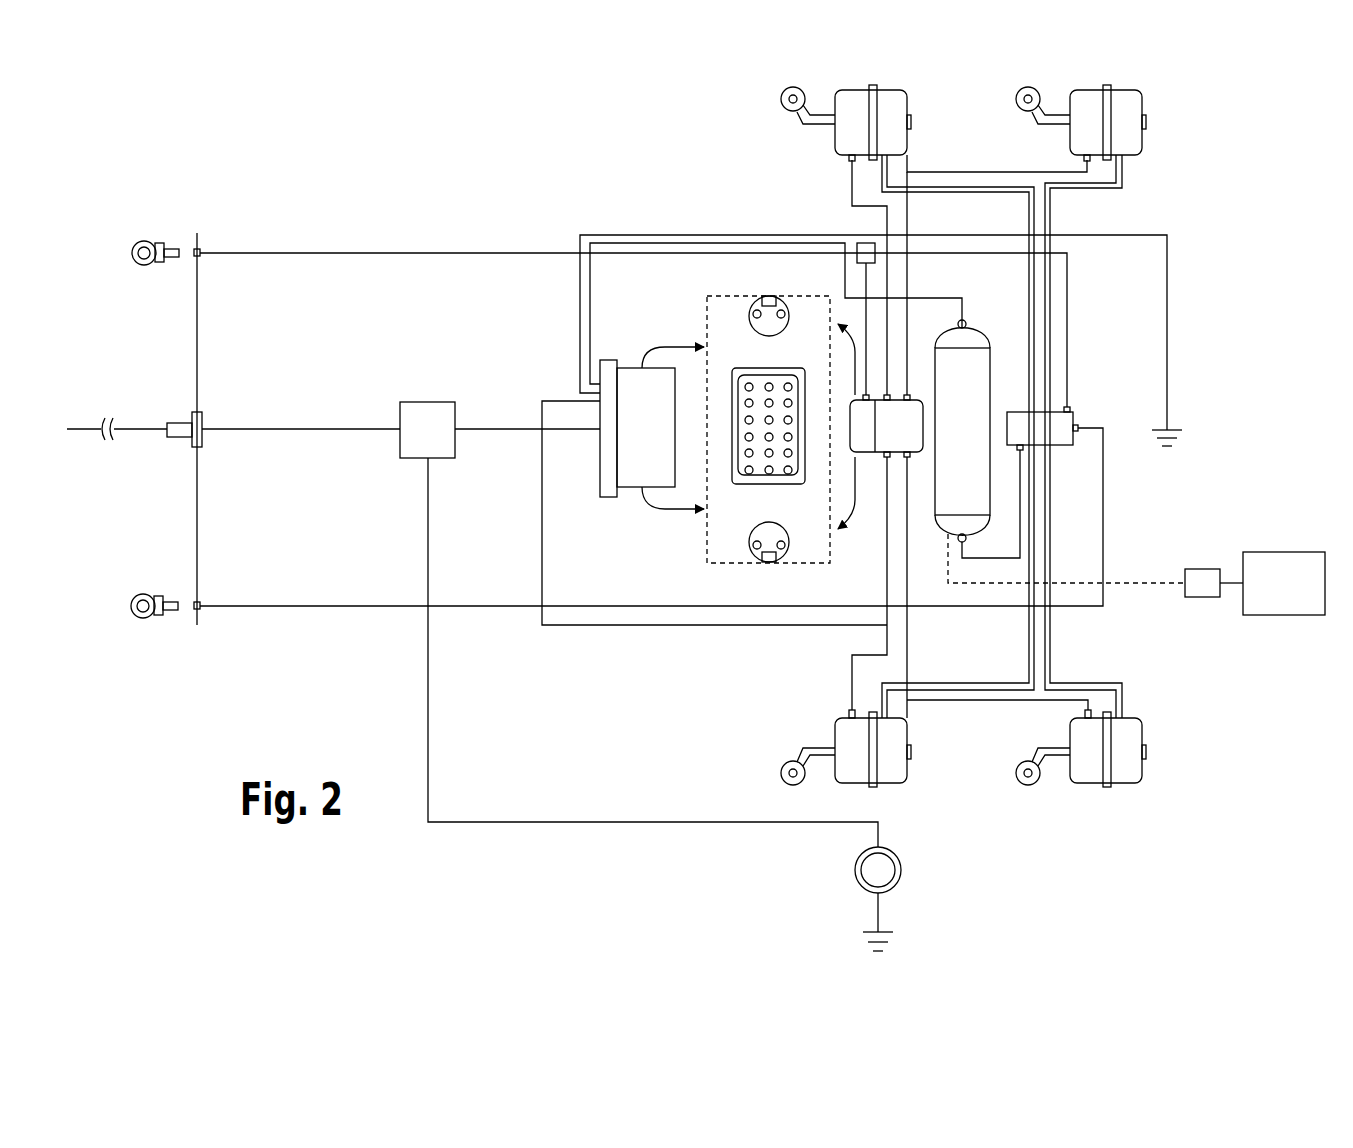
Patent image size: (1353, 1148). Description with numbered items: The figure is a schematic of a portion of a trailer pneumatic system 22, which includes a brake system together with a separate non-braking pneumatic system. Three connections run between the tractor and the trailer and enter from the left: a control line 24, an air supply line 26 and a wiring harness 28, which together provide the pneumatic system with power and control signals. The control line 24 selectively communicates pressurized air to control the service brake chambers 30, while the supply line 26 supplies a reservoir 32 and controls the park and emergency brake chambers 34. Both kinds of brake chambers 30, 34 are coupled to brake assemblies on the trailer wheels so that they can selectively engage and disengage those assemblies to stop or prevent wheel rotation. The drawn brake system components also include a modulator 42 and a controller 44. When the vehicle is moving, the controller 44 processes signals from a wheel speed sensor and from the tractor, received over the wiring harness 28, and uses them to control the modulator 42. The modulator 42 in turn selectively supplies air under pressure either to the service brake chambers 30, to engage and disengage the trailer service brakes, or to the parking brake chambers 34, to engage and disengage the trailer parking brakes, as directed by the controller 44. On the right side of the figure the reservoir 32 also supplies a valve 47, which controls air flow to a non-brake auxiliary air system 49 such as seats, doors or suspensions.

The trailer pneumatic system 22 is at (698, 146).
The control line 24 is at (228, 253).
The air supply line 26 is at (232, 606).
The wiring harness 28 is at (278, 429).
The service brake chambers 30 is at (860, 98).
The reservoir 32 is at (978, 445).
The park and emergency brake chambers 34 is at (893, 108).
The modulator 42 is at (915, 445).
The controller 44 is at (866, 440).
The valve 47 is at (1203, 597).
The non-brake auxiliary air system 49 is at (1278, 552).